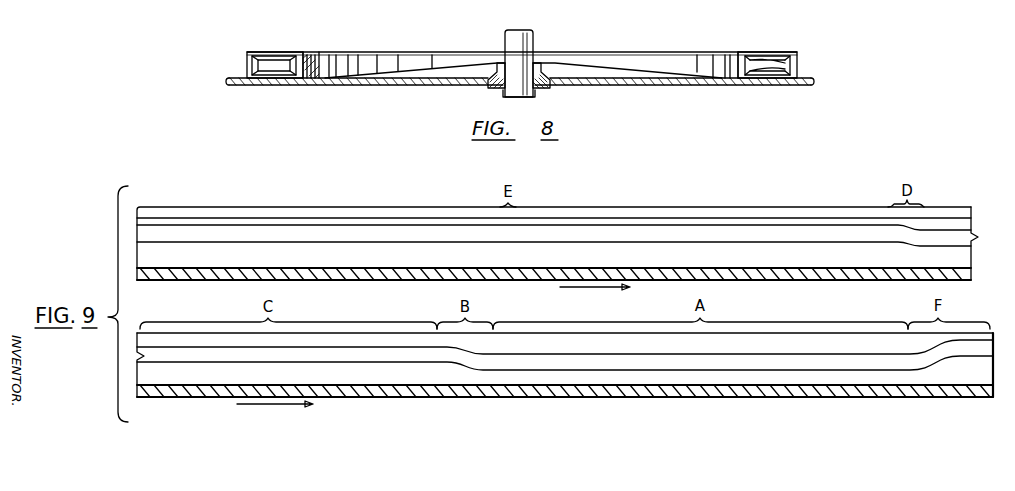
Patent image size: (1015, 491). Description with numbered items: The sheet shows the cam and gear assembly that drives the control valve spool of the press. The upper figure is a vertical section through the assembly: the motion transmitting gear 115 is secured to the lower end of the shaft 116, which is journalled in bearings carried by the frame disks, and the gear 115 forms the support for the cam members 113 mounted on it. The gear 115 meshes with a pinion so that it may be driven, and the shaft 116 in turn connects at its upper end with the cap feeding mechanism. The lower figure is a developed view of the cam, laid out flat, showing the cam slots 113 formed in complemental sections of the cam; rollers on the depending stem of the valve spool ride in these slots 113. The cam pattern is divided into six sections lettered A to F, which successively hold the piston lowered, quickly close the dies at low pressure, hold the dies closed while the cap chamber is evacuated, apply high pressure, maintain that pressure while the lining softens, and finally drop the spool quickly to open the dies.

In FIG. 9, the cam slots 113 is at (790, 230).
In FIG. 8, the motion transmitting gear 115 is at (410, 86).
In FIG. 9, the motion transmitting gear 115 is at (165, 281).
In FIG. 8, the shaft 116 is at (534, 48).